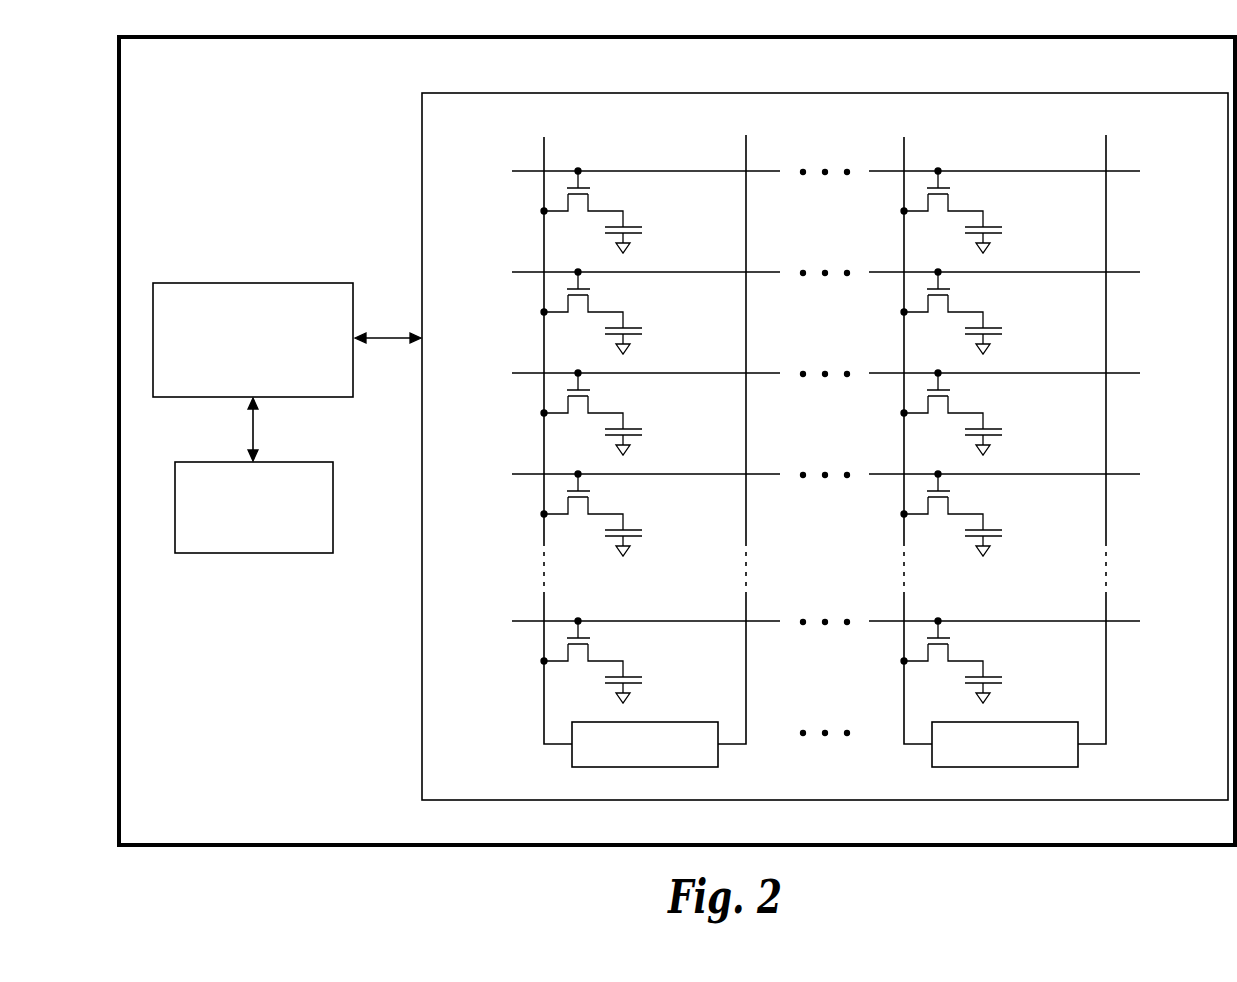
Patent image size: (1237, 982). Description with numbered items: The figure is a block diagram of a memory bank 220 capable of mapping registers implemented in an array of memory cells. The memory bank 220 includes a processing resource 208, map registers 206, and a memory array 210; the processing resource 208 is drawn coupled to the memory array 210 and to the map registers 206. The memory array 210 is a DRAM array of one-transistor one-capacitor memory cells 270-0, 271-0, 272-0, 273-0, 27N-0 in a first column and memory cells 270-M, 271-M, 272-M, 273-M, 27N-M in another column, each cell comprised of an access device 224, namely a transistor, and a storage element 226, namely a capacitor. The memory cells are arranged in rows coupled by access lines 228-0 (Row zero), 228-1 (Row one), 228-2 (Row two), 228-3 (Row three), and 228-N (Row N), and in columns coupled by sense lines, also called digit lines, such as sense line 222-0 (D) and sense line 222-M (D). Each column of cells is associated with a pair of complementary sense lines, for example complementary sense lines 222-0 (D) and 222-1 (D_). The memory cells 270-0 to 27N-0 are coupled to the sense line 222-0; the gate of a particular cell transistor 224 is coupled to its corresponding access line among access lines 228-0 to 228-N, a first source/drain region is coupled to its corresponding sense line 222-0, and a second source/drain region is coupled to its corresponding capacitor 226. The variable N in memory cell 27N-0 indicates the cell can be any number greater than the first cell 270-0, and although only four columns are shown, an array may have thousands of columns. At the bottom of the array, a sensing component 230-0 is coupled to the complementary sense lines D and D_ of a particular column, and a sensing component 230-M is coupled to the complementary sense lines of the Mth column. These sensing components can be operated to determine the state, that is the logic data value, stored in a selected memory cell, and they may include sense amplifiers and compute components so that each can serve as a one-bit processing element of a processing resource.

The memory bank 220 is at (208, 47).
The memory array 210 is at (432, 134).
The processing resource 208 is at (222, 290).
The map registers 206 is at (232, 546).
The sense line 222-0 is at (546, 151).
The sense line 222-1 is at (746, 152).
The sense line 222-M is at (906, 151).
The access device 224 is at (566, 188).
The storage element 226 is at (642, 229).
The access line 228-0 is at (767, 174).
The access line 228-1 is at (767, 275).
The access line 228-2 is at (767, 376).
The access line 228-3 is at (767, 477).
The access line 228-N is at (767, 624).
The memory cell 270-0 is at (595, 210).
The memory cell 271-0 is at (590, 303).
The memory cell 272-0 is at (590, 404).
The memory cell 273-0 is at (590, 505).
The memory cell 27N-0 is at (590, 652).
The memory cell 270-M is at (950, 202).
The memory cell 271-M is at (950, 303).
The memory cell 272-M is at (950, 404).
The memory cell 273-M is at (950, 505).
The memory cell 27N-M is at (950, 652).
The sensing component 230-0 is at (668, 726).
The sensing component 230-M is at (1028, 726).